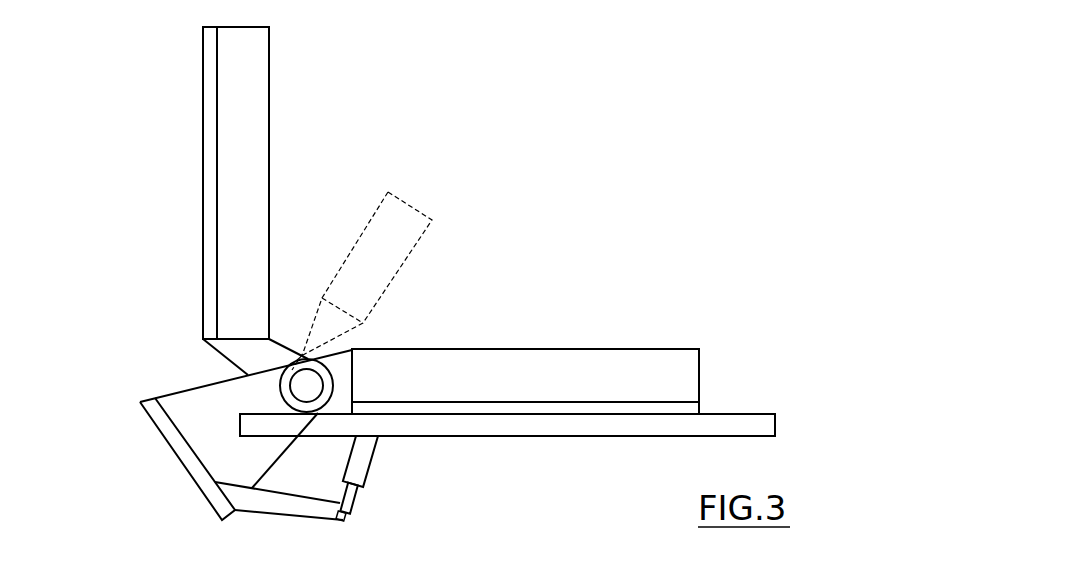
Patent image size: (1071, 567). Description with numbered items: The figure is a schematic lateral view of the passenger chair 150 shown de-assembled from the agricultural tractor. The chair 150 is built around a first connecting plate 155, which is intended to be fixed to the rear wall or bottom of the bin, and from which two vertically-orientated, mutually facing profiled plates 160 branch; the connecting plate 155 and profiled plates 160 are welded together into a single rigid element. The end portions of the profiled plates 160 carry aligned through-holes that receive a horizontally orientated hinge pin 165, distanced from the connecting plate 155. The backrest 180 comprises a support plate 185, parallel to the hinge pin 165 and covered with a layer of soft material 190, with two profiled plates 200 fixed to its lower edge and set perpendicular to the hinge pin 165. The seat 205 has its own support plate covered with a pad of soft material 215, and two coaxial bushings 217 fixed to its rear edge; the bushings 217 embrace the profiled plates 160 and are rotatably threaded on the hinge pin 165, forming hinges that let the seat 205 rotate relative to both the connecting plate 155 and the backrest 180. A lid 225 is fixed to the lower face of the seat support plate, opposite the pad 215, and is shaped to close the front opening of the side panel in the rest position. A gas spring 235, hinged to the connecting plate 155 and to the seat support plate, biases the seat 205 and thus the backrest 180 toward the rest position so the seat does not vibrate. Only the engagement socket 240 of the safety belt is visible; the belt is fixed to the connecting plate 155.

The chair 150 is at (613, 137).
The first connecting plate 155 is at (185, 447).
The profiled plates 160 is at (227, 457).
The hinge pin 165 is at (310, 387).
The backrest 180 is at (199, 124).
The support plate 185 is at (203, 187).
The layer of soft material 190 is at (250, 75).
The profiled plates 200 is at (243, 355).
The seat 205 is at (612, 332).
The pad of soft material 215 is at (518, 367).
The bushings 217 is at (270, 524).
The lid 225 is at (533, 423).
The gas spring 235 is at (368, 472).
The engagement socket 240 is at (402, 227).